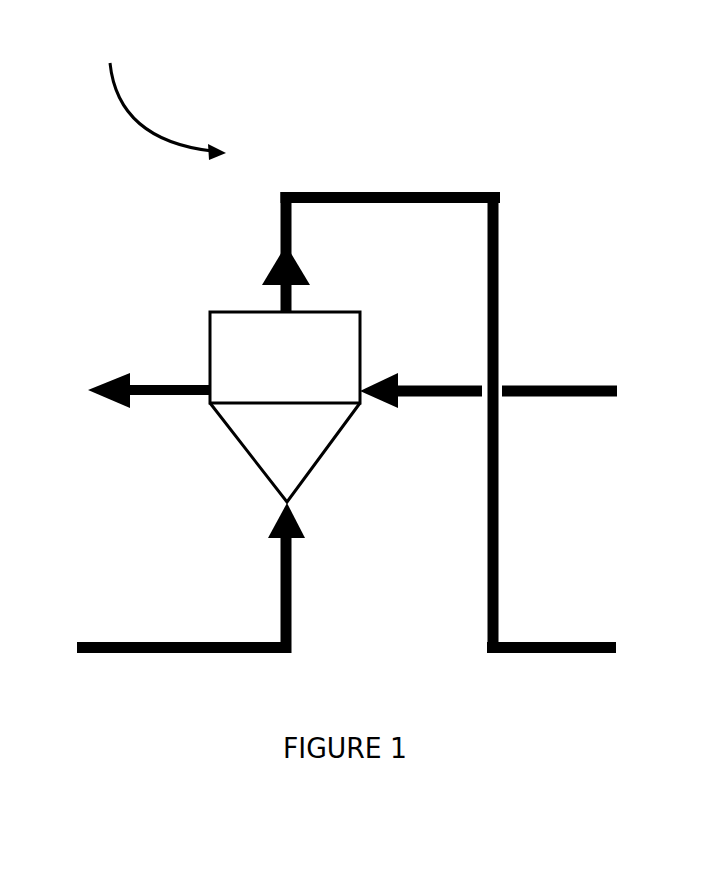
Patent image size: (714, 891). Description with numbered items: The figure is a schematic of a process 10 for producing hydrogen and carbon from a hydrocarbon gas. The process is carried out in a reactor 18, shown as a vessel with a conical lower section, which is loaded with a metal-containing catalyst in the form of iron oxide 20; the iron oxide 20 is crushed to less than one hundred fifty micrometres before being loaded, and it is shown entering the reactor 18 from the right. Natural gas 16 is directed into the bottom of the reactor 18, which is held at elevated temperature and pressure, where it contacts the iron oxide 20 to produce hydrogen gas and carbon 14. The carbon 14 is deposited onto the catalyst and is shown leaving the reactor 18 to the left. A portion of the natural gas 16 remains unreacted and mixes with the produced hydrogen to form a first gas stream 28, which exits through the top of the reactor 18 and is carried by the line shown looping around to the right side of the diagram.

The process 10 is at (153, 85).
The carbon 14 is at (163, 383).
The natural gas 16 is at (193, 642).
The reactor 18 is at (245, 310).
The iron oxide 20 is at (580, 385).
The first gas stream 28 is at (397, 190).